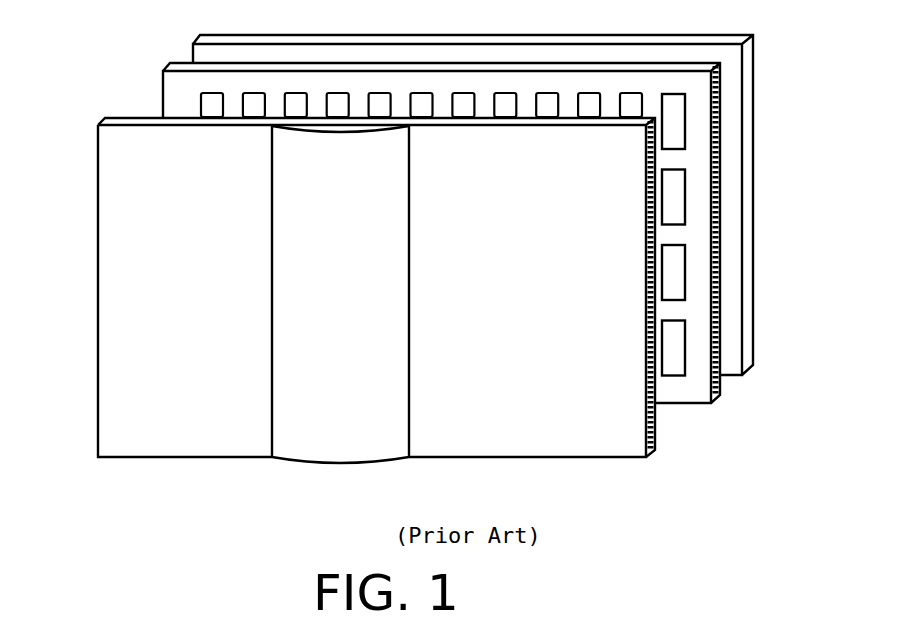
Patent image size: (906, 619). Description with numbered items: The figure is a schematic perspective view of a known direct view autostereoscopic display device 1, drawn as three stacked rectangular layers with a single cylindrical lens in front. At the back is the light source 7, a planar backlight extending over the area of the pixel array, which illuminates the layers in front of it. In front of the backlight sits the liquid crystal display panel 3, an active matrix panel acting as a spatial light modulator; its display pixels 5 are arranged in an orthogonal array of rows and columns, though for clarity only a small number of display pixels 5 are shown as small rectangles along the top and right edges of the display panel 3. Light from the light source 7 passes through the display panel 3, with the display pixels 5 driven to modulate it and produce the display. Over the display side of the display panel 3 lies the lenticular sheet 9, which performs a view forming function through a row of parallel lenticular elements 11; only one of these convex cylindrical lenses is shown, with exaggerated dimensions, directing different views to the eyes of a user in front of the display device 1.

The autostereoscopic display device 1 is at (84, 54).
The liquid crystal display panel 3 is at (720, 387).
The display pixels 5 is at (685, 182).
The light source 7 is at (753, 346).
The lenticular sheet 9 is at (656, 433).
The lenticular elements 11 is at (337, 452).